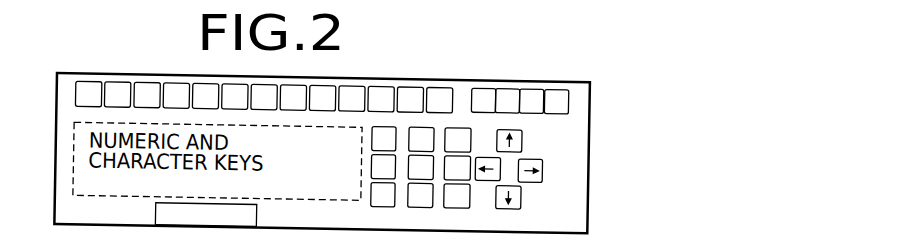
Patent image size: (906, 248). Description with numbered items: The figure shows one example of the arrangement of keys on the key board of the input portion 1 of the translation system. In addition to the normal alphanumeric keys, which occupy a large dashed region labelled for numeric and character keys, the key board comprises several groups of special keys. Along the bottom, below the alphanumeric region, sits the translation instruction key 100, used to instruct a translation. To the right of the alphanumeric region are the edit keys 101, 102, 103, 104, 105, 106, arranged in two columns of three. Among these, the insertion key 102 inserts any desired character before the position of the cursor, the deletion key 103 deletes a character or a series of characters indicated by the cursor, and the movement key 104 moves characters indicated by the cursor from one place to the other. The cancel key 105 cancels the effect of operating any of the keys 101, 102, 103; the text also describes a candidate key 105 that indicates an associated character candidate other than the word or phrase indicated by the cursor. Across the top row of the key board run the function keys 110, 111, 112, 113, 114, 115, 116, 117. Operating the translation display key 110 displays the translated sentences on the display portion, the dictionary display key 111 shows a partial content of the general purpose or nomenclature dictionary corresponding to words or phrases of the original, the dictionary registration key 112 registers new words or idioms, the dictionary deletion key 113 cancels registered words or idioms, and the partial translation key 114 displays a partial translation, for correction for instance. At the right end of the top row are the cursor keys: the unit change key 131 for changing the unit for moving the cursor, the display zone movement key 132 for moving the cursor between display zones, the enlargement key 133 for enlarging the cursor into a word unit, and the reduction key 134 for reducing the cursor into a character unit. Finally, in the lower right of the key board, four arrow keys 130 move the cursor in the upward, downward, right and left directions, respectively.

The input portion 1 is at (587, 85).
The translation instruction key 100 is at (205, 215).
The edit key 101 is at (383, 194).
The insertion key 102 is at (383, 167).
The deletion key 103 is at (384, 139).
The movement key 104 is at (420, 195).
The cancel key 105 is at (420, 167).
The edit key 106 is at (421, 139).
The translation display key 110 is at (88, 93).
The dictionary display key 111 is at (117, 94).
The dictionary registration key 112 is at (147, 94).
The dictionary deletion key 113 is at (176, 95).
The partial translation key 114 is at (205, 95).
The function key 115 is at (235, 96).
The function key 116 is at (264, 96).
The function key 117 is at (293, 97).
The cursor moving keys 130 is at (499, 220).
The unit change key 131 is at (483, 100).
The display zone movement key 132 is at (507, 101).
The enlargement key 133 is at (531, 101).
The reduction key 134 is at (556, 102).